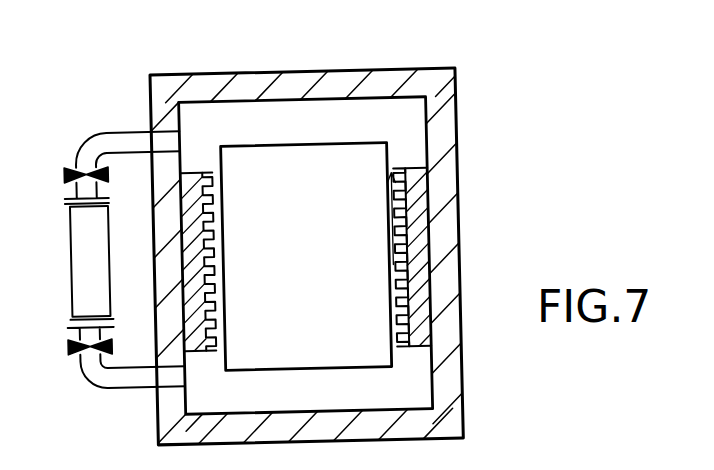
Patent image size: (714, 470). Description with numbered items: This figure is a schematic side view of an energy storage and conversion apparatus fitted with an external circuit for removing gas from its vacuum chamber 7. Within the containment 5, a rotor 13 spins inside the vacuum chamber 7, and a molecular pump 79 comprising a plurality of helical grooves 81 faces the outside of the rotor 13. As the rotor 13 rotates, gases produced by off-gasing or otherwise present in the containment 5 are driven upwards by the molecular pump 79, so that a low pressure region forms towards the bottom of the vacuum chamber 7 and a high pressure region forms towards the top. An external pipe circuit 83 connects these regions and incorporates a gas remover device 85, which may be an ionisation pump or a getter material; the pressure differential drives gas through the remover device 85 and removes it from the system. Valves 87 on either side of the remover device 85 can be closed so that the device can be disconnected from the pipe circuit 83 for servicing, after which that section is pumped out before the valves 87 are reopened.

The containment 5 is at (252, 94).
The vacuum chamber 7 is at (314, 124).
The rotor 13 is at (322, 290).
The molecular pump 79 is at (413, 248).
The helical grooves 81 is at (394, 341).
The external pipe circuit 83 is at (110, 139).
The gas remover device 85 is at (105, 304).
The valves 87 is at (61, 165).